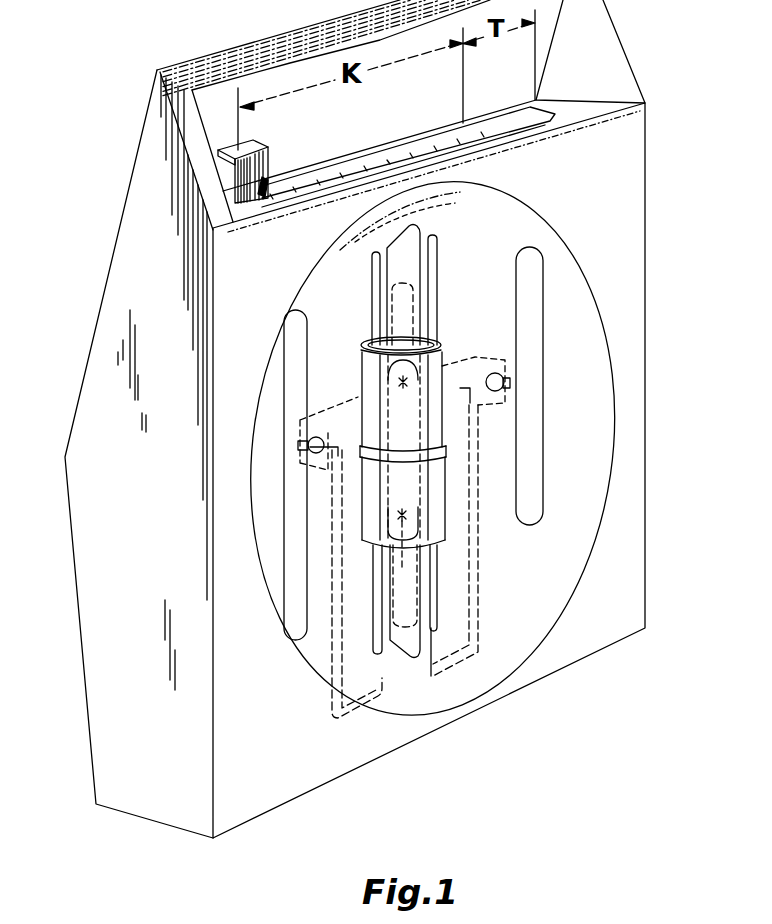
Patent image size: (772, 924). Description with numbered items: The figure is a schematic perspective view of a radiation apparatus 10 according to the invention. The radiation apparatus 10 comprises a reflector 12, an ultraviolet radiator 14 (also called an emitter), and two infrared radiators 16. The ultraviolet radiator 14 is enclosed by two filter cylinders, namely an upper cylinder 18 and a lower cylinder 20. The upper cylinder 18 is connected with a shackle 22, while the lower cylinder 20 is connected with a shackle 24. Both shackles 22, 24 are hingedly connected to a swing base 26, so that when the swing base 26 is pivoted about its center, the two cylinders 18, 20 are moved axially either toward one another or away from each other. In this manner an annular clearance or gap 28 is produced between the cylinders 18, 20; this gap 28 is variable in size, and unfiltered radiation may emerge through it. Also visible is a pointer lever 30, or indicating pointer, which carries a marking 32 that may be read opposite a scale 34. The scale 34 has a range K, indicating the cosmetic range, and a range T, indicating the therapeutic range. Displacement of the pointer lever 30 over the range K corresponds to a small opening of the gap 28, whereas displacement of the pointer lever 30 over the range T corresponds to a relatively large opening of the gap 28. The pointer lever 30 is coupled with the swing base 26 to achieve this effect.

The radiation apparatus 10 is at (563, 672).
The reflector 12 is at (507, 667).
The ultraviolet radiator 14 is at (410, 484).
The infrared radiators 16 is at (300, 635).
The upper filter cylinder 18 is at (443, 350).
The lower filter cylinder 20 is at (438, 520).
The shackle 22 is at (334, 544).
The shackle 24 is at (470, 553).
The swing base 26 is at (333, 420).
The annular gap 28 is at (444, 452).
The pointer lever 30 is at (219, 150).
The marking 32 is at (268, 187).
The scale 34 is at (381, 172).